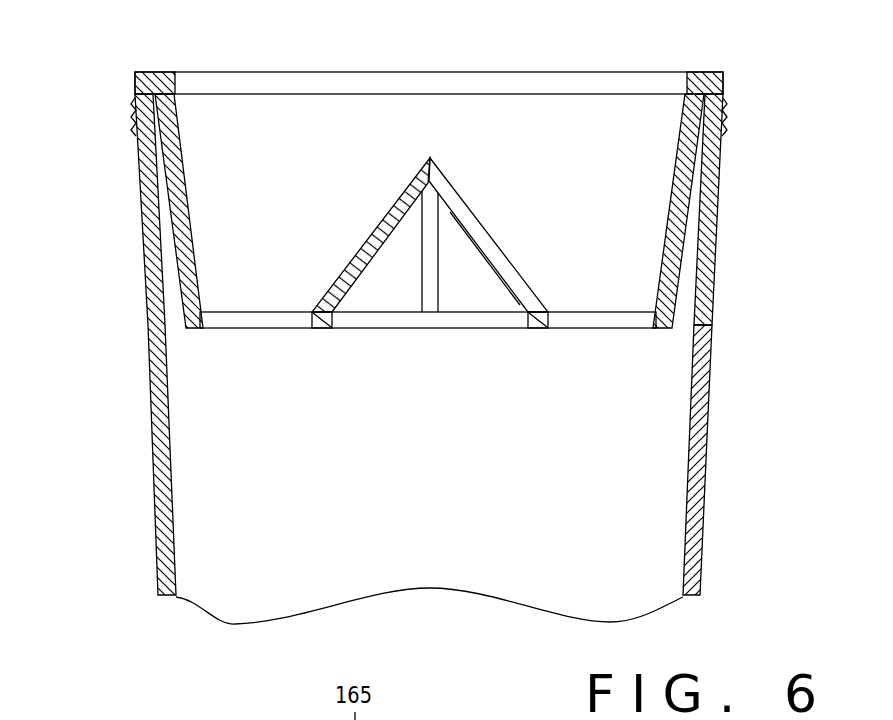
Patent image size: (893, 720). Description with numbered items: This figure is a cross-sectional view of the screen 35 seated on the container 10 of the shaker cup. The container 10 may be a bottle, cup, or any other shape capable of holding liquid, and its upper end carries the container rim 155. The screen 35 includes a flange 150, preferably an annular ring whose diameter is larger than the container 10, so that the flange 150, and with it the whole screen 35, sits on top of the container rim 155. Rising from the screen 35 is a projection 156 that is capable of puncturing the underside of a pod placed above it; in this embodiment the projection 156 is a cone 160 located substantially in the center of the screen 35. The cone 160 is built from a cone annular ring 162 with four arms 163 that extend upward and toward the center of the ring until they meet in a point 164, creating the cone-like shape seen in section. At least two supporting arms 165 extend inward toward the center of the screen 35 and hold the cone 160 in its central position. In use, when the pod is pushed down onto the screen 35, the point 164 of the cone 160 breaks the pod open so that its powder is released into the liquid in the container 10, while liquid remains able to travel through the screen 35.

The container 10 is at (712, 520).
The screen 35 is at (708, 70).
The flange 150 is at (153, 73).
The container rim 155 is at (134, 136).
The projection 156 is at (512, 250).
The cone 160 is at (440, 222).
The cone annular ring 162 is at (397, 328).
The arms 163 is at (373, 228).
The point 164 is at (430, 158).
The supporting arms 165 is at (577, 328).